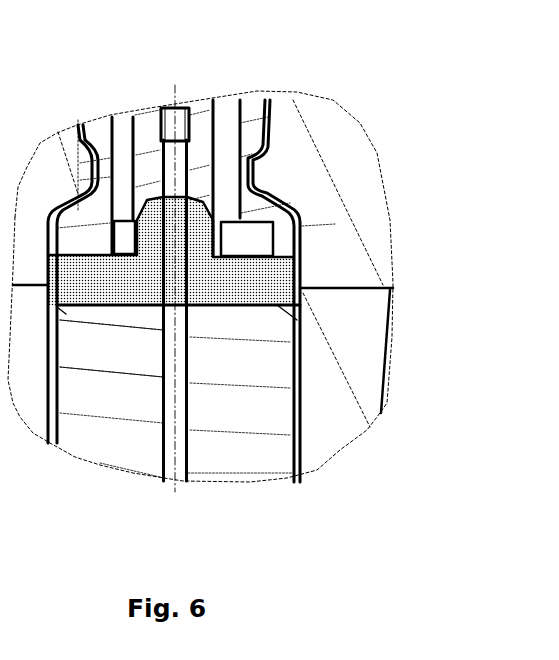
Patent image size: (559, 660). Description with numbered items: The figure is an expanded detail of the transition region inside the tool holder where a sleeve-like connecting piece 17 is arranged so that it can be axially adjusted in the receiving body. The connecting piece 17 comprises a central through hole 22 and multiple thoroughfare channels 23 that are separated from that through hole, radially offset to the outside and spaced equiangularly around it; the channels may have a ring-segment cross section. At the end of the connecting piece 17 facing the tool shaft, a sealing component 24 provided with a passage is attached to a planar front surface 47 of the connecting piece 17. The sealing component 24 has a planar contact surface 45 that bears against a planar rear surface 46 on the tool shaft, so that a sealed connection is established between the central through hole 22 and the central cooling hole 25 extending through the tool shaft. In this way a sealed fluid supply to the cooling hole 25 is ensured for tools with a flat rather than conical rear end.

The sleeve-like connecting piece 17 is at (280, 263).
The central through hole 22 is at (153, 96).
The thoroughfare channels 23 is at (227, 113).
The sealing component 24 is at (205, 290).
The central cooling hole 25 is at (178, 428).
The planar contact surface 45 is at (107, 310).
The planar rear surface 46 is at (320, 355).
The planar front surface 47 is at (56, 284).